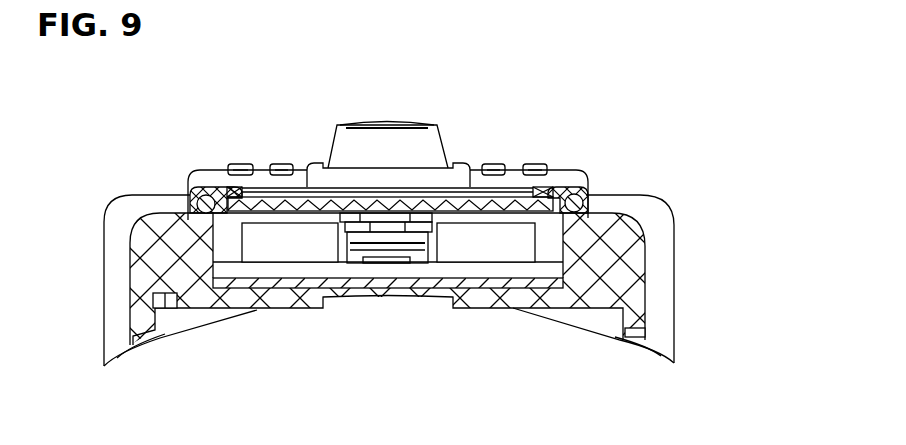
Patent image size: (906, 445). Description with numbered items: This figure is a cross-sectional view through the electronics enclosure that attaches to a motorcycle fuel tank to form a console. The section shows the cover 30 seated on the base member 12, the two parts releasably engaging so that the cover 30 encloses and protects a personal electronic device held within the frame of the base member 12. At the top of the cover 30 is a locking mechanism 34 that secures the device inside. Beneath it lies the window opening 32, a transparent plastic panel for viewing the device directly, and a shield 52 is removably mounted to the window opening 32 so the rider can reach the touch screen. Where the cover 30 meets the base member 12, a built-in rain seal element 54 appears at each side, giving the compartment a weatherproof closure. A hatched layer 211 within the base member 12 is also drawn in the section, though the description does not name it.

The base member 12 is at (688, 297).
The cover 30 is at (573, 161).
The window opening 32 is at (511, 188).
The locking mechanism 34 is at (430, 153).
The shield 52 is at (288, 196).
The rain seal element 54 is at (183, 192).
The support plate 211 is at (514, 284).